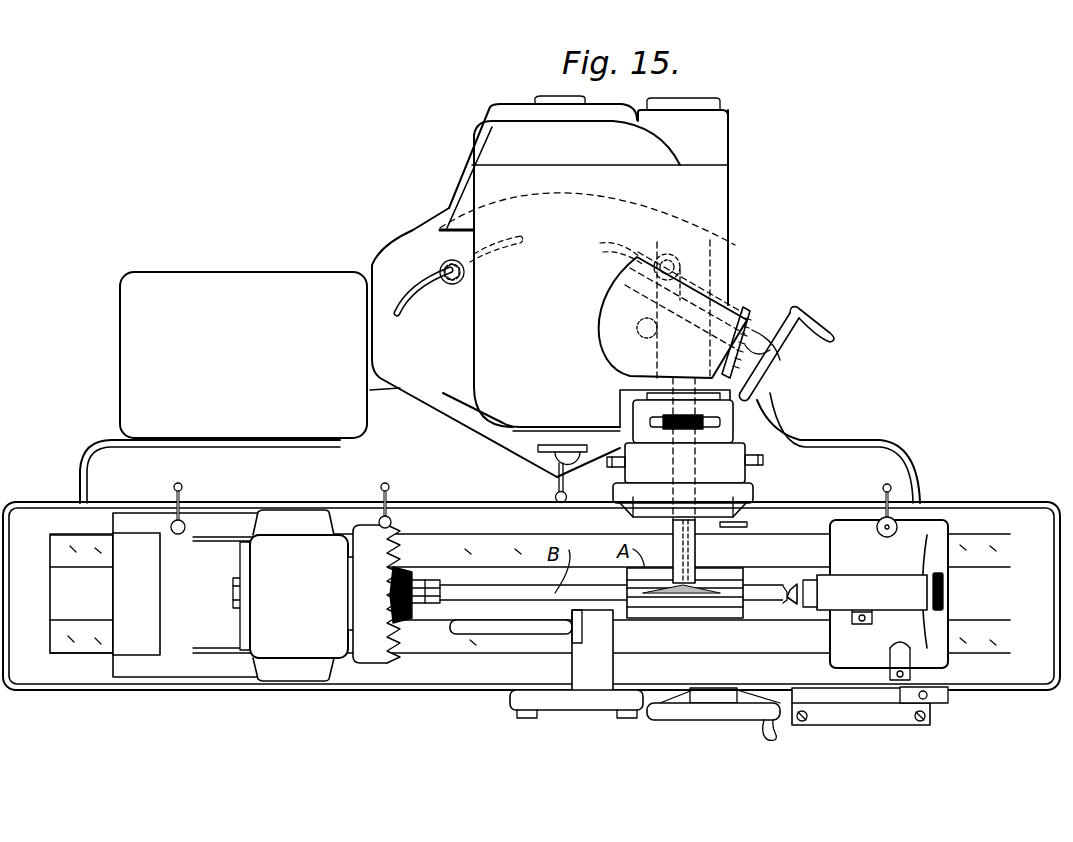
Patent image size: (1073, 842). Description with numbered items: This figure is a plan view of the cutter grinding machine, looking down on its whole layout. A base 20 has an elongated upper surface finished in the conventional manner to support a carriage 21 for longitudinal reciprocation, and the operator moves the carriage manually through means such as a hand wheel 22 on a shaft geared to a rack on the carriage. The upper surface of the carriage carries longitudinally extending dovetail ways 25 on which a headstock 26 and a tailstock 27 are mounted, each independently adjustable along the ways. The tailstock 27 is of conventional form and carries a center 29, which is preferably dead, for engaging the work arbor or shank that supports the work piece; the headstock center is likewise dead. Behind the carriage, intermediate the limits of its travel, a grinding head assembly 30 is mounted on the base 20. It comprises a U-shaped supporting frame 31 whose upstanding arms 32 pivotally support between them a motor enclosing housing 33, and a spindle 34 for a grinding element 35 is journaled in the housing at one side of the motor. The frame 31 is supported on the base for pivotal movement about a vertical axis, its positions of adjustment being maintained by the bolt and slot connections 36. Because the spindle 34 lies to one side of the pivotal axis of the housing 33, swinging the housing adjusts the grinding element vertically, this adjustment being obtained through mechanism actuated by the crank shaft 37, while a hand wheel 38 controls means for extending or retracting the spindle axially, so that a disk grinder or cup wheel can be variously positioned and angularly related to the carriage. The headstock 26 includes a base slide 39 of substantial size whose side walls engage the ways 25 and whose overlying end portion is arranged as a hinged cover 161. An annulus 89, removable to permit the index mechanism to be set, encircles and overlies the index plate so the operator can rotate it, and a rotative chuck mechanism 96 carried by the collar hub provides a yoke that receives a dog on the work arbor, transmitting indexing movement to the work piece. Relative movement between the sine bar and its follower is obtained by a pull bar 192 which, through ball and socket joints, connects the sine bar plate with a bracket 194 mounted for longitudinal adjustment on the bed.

The base 20 is at (92, 452).
The carriage 21 is at (51, 551).
The hand wheel 22 is at (660, 713).
The dovetail ways 25 is at (70, 633).
The headstock 26 is at (340, 527).
The tailstock 27 is at (937, 508).
The center 29 is at (792, 590).
The grinding head assembly 30 is at (470, 437).
The U-shaped supporting frame 31 is at (432, 397).
The upstanding arms 32 is at (537, 110).
The motor enclosing housing 33 is at (476, 327).
The spindle 34 is at (690, 551).
The grinding element 35 is at (688, 600).
The bolt and slot connections 36 is at (440, 264).
The crank shaft 37 is at (763, 462).
The hand wheel 38 is at (793, 312).
The base slide 39 is at (156, 486).
The annulus 89 is at (367, 577).
The rotative chuck mechanism 96 is at (414, 567).
The hinged cover 161 is at (143, 590).
The pull bar 192 is at (493, 630).
The bracket 194 is at (583, 692).